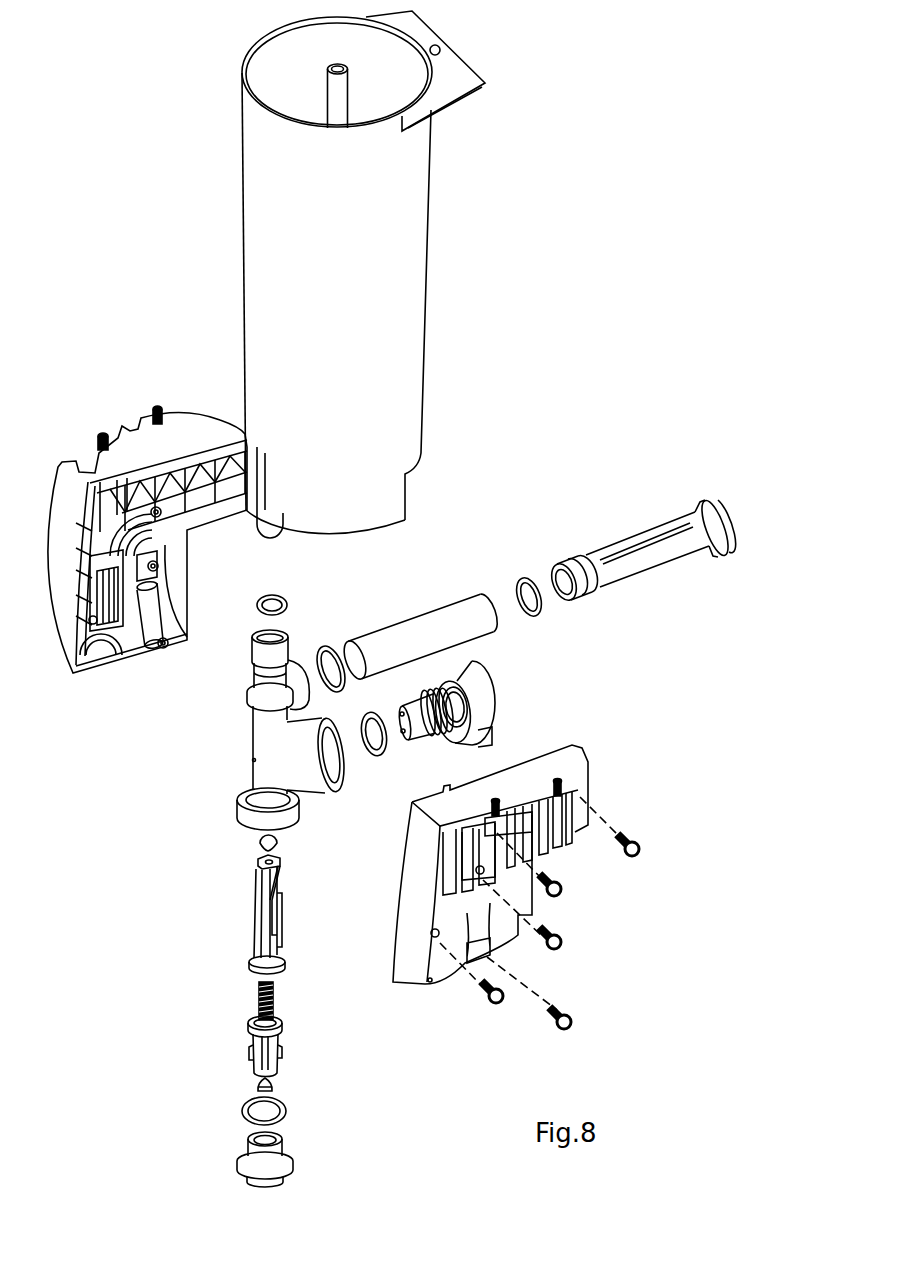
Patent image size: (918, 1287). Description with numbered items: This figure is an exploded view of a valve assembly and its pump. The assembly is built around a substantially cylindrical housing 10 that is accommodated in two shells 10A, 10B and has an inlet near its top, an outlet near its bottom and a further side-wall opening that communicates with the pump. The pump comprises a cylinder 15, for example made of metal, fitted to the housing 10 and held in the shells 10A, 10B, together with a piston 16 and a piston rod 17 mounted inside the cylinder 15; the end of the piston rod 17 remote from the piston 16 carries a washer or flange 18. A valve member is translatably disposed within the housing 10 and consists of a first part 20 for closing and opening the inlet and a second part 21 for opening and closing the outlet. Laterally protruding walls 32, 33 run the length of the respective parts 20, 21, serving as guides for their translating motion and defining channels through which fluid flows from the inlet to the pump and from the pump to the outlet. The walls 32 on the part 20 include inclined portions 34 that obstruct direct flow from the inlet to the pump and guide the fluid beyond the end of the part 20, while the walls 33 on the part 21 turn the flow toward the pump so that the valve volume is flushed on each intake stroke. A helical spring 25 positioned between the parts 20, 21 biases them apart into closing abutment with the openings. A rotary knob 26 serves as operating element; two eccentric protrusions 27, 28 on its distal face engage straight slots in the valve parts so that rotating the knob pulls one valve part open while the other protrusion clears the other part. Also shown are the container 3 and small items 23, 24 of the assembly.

The cylinder / liquid container 3 is at (417, 333).
The housing 10 is at (262, 723).
The shell 10A is at (542, 760).
The shell 10B is at (147, 432).
The cylinder 15 is at (423, 618).
The piston 16 is at (580, 560).
The piston rod 17 is at (625, 555).
The washer or flange 18 is at (705, 503).
The first valve part 20 is at (250, 935).
The second valve part 21 is at (250, 1050).
The plug 23 is at (258, 842).
The nut 24 is at (257, 1087).
The helical spring 25 is at (260, 990).
The rotary knob 26 is at (492, 668).
The eccentric protrusion 27 is at (399, 718).
The eccentric protrusion 28 is at (403, 734).
The laterally protruding walls 32 is at (254, 917).
The laterally protruding walls 33 is at (252, 1038).
The inclined portions 34 is at (257, 887).